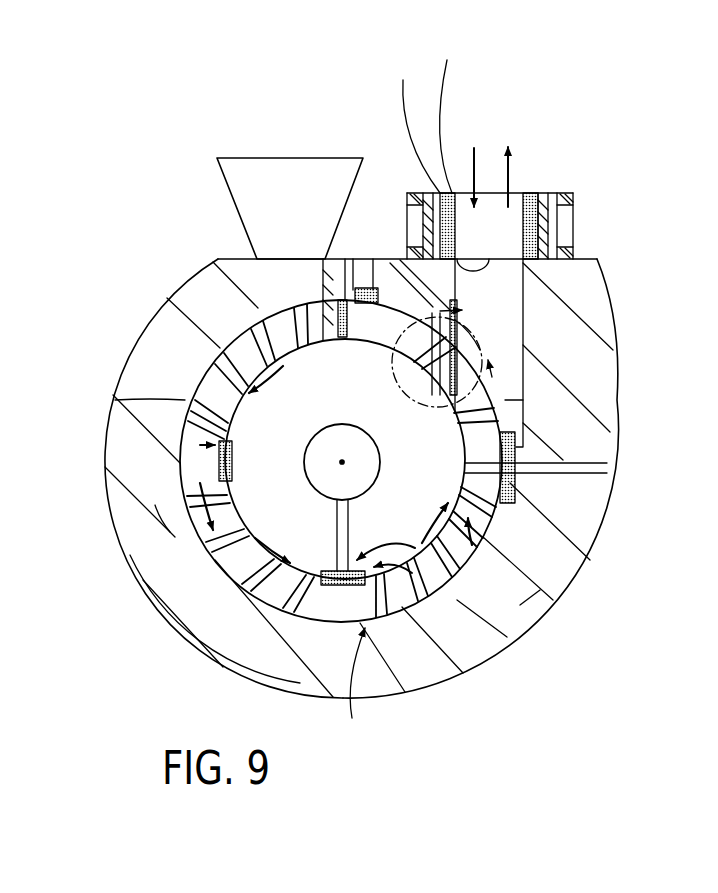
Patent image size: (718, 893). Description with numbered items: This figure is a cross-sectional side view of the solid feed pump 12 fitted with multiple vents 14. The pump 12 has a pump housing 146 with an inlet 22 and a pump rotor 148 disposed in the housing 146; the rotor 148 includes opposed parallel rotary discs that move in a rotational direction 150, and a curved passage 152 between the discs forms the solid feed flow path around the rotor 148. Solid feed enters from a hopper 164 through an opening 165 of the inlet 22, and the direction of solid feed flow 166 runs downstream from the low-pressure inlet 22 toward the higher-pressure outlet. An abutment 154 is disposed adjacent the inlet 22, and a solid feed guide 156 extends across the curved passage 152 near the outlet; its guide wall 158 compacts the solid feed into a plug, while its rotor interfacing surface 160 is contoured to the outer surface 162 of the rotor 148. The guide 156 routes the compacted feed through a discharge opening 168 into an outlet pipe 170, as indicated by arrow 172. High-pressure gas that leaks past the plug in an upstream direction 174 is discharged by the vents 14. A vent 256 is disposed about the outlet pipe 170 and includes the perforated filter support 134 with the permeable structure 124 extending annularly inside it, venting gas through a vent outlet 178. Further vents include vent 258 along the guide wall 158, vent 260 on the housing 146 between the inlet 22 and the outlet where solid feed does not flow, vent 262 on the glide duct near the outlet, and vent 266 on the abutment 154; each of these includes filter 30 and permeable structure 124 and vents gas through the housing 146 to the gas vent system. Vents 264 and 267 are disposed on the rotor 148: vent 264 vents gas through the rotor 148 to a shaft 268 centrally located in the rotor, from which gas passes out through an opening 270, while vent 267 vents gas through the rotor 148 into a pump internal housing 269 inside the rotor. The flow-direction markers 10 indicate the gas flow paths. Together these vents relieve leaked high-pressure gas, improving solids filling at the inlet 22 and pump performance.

The solid feed pump 12 is at (118, 228).
The hopper 164 is at (260, 158).
The permeable structure 124 is at (432, 728).
The filter 30 is at (437, 408).
The discharge opening 168 is at (428, 192).
The upstream direction 174 is at (470, 182).
The outlet pipe 170 is at (495, 205).
The arrow 172 is at (513, 180).
The perforated filter support 134 is at (534, 193).
The vent 14 is at (527, 191).
The vent 256 is at (572, 211).
The vent outlet 178 is at (553, 229).
The inlet 22 is at (262, 275).
The opening 165 is at (235, 297).
The vent 258 is at (467, 342).
The flow direction 10 is at (477, 336).
The outer surface 162 is at (115, 400).
The vent 267 is at (200, 444).
The abutment 154 is at (336, 340).
The vent 260 is at (318, 408).
The vent 266 is at (336, 469).
The solid feed guide 156 is at (432, 382).
The guide wall 158 is at (505, 400).
The rotor interfacing surface 160 is at (452, 395).
The pump internal housing 269 is at (252, 482).
The vent 262 is at (524, 454).
The shaft 268 is at (330, 485).
The opening 270 is at (342, 462).
The direction of solid feed flow 166 is at (155, 505).
The rotational direction 150 is at (218, 577).
The pump housing 146 is at (113, 527).
The pump rotor 148 is at (347, 689).
The curved passage 152 is at (520, 605).
The vent 264 is at (455, 612).